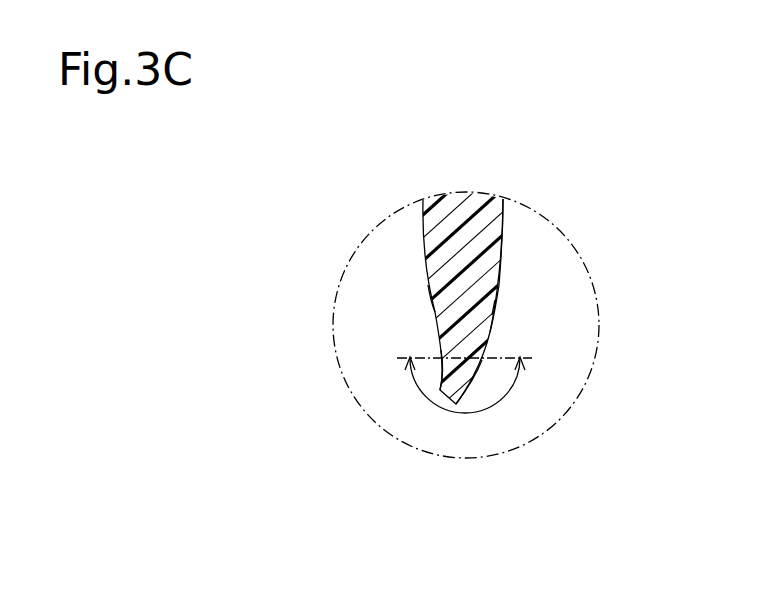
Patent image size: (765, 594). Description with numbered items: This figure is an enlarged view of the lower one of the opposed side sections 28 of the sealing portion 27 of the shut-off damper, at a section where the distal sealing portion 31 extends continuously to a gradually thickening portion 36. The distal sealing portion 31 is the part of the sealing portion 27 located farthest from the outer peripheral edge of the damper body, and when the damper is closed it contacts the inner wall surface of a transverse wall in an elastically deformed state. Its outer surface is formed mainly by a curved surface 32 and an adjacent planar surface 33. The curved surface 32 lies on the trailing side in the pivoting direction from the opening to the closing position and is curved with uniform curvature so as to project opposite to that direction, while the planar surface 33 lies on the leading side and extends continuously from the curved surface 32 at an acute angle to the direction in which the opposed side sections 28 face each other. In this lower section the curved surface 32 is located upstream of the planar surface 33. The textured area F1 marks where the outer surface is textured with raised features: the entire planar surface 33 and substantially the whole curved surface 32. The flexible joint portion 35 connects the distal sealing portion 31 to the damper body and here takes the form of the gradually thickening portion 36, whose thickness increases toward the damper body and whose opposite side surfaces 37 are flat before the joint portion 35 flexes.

The sealing portion 27 is at (431, 222).
The opposed side sections 28 is at (390, 298).
The distal sealing portion 31 is at (481, 302).
The curved surface 32 is at (443, 372).
The planar surface 33 is at (480, 374).
The joint portion 35 is at (492, 280).
The gradually thickening portion 36 is at (587, 298).
The opposite side surfaces 37 is at (432, 292).
The textured area F1 is at (462, 413).